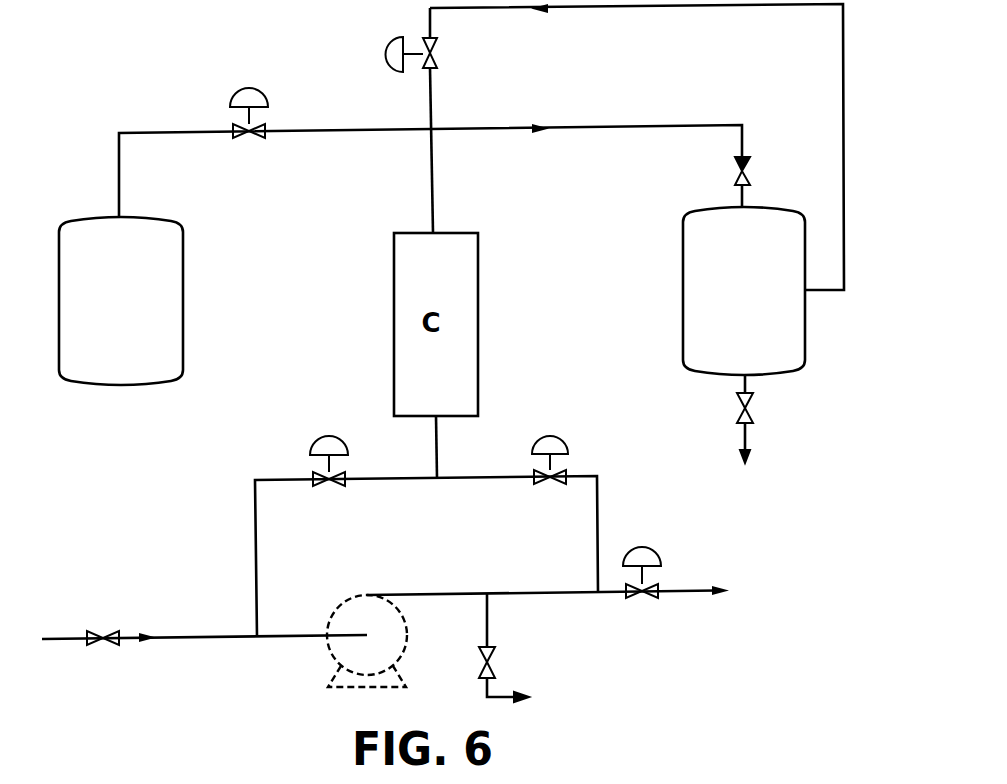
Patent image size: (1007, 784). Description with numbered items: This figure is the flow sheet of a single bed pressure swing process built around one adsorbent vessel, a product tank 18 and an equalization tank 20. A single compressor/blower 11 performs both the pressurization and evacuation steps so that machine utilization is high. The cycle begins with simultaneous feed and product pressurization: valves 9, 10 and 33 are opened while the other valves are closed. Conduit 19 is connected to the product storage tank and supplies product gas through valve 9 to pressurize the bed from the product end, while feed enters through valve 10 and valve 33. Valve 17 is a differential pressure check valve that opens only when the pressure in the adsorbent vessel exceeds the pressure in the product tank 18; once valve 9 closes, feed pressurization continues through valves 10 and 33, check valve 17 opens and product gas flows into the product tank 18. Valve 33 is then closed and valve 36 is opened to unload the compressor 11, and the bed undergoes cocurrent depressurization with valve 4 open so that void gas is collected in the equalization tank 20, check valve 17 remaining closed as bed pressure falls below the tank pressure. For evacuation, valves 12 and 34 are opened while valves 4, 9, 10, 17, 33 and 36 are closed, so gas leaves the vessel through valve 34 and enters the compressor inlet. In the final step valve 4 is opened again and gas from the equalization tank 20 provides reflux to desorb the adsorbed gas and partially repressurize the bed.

The valve 4 is at (249, 125).
The valve 9 is at (423, 54).
The valve 10 is at (103, 650).
The compressor/blower 11 is at (367, 641).
The valve 12 is at (505, 647).
The differential pressure check valve 17 is at (761, 182).
The product tank 18 is at (744, 355).
The conduit 19 is at (659, 147).
The equalization tank 20 is at (121, 301).
The valve 33 is at (550, 474).
The valve 34 is at (329, 474).
The valve 36 is at (642, 586).